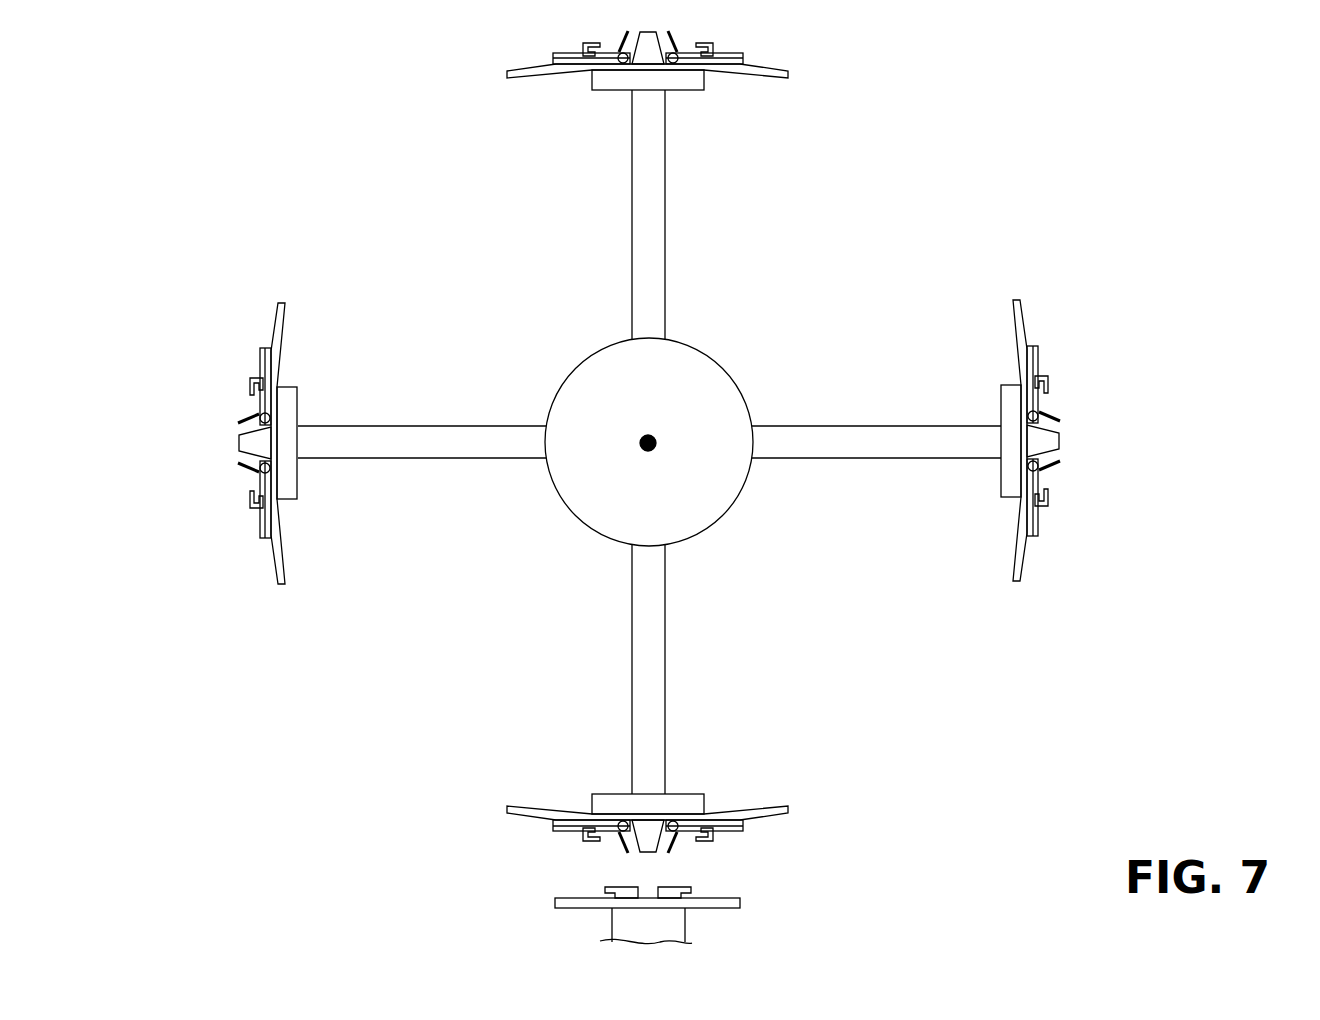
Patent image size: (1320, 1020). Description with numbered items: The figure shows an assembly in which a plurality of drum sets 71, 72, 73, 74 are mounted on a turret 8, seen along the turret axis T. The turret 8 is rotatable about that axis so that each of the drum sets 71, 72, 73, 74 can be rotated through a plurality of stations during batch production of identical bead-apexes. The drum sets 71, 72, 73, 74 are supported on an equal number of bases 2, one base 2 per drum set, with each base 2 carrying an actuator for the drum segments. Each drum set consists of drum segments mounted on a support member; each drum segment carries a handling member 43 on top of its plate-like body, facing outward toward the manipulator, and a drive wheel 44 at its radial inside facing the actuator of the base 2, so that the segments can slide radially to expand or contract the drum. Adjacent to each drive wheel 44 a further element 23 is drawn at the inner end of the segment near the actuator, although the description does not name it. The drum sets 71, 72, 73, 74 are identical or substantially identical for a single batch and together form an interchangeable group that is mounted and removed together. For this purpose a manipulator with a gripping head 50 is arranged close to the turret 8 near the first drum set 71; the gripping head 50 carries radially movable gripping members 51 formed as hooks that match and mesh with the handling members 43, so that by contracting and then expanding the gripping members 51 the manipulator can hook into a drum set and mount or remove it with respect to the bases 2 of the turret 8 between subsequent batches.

The base 2 is at (697, 80).
The turret 8 is at (586, 512).
The spring arm 23 is at (672, 42).
The handling member 43 is at (585, 46).
The drive wheel 44 is at (625, 63).
The gripping head 50 is at (677, 930).
The gripping member 51 is at (612, 888).
The first drum set 71 is at (800, 782).
The drum set 72 is at (250, 294).
The drum set 73 is at (501, 105).
The drum set 74 is at (1078, 301).